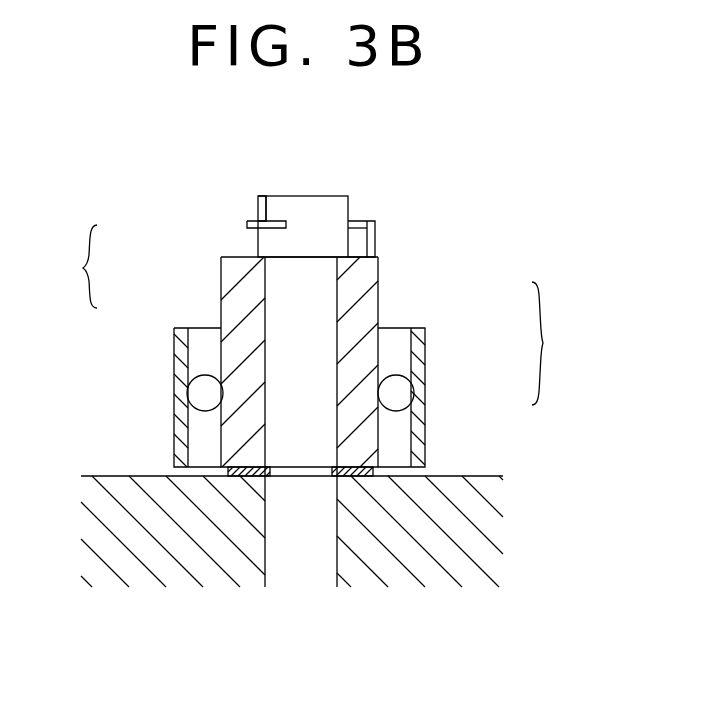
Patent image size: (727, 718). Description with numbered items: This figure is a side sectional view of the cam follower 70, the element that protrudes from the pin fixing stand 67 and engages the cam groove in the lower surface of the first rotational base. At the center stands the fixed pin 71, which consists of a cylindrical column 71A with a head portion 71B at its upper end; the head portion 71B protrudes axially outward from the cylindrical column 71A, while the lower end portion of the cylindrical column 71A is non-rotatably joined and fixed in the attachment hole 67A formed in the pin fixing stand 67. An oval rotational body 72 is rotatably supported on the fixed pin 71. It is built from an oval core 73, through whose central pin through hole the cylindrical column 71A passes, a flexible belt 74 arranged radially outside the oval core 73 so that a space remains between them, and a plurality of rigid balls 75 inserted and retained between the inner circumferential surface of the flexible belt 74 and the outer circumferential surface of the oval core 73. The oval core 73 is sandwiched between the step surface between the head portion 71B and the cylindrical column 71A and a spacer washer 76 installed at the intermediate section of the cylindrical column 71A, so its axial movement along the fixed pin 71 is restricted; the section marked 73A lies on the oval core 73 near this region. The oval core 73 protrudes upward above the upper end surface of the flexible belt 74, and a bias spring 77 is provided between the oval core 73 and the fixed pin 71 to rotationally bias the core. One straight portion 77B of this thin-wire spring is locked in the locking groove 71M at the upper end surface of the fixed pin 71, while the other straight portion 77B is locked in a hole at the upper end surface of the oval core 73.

The cam follower 70 is at (513, 138).
The fixed pin 71 is at (71, 266).
The cylindrical column 71A is at (282, 293).
The head portion 71B is at (270, 245).
The locking groove 71M is at (277, 210).
The oval rotational body 72 is at (558, 343).
The oval core 73 is at (358, 297).
The groove 73A is at (258, 366).
The flexible belt 74 is at (423, 353).
The rigid balls 75 is at (397, 393).
The spacer washer 76 is at (368, 468).
The bias spring 77 is at (361, 221).
The straight portion 77B is at (371, 238).
The pin fixing stand 67 is at (125, 491).
The attachment hole 67A is at (265, 543).